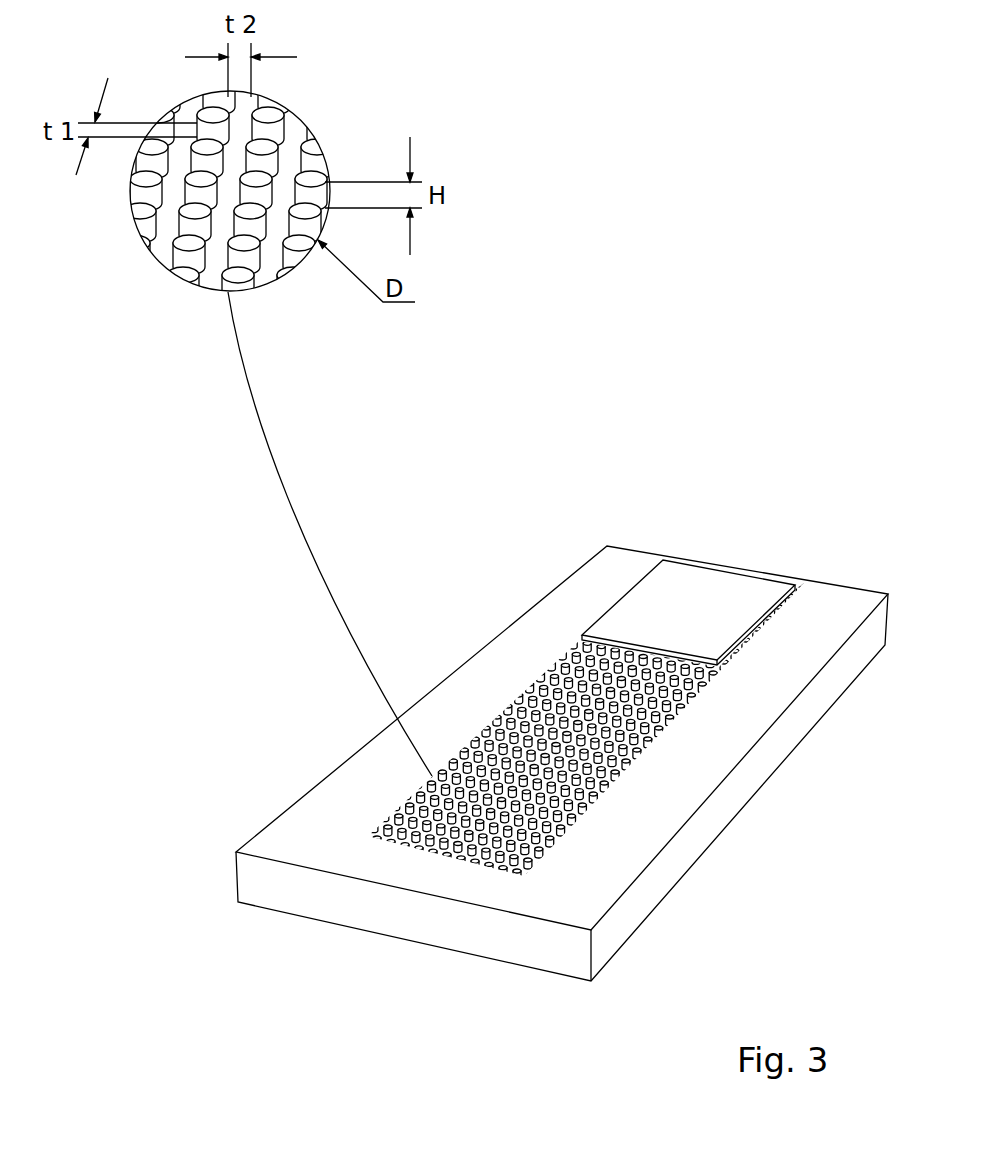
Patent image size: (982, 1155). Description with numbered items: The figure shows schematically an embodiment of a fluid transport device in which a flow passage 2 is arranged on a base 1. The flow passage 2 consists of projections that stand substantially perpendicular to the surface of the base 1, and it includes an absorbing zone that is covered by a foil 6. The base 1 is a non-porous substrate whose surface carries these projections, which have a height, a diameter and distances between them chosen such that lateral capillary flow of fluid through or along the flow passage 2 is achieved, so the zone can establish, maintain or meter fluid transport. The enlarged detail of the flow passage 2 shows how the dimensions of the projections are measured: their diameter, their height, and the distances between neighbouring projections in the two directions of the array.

The base 1 is at (725, 797).
The flow passage 2 is at (557, 662).
The foil 6 is at (705, 578).